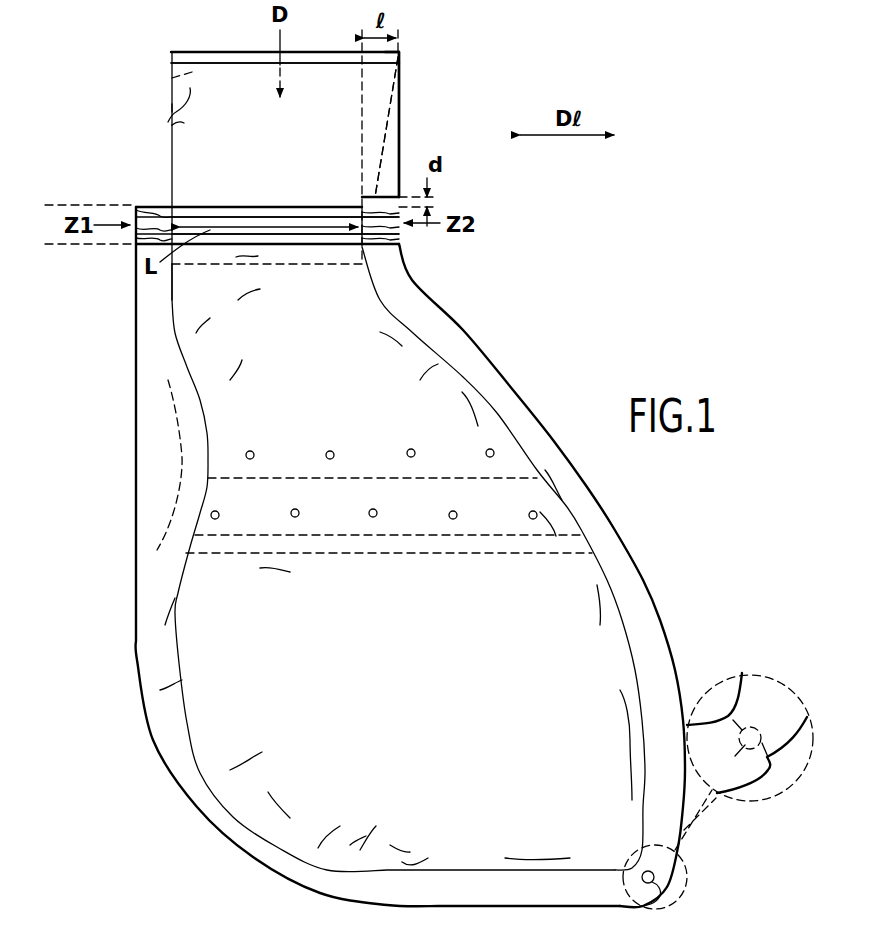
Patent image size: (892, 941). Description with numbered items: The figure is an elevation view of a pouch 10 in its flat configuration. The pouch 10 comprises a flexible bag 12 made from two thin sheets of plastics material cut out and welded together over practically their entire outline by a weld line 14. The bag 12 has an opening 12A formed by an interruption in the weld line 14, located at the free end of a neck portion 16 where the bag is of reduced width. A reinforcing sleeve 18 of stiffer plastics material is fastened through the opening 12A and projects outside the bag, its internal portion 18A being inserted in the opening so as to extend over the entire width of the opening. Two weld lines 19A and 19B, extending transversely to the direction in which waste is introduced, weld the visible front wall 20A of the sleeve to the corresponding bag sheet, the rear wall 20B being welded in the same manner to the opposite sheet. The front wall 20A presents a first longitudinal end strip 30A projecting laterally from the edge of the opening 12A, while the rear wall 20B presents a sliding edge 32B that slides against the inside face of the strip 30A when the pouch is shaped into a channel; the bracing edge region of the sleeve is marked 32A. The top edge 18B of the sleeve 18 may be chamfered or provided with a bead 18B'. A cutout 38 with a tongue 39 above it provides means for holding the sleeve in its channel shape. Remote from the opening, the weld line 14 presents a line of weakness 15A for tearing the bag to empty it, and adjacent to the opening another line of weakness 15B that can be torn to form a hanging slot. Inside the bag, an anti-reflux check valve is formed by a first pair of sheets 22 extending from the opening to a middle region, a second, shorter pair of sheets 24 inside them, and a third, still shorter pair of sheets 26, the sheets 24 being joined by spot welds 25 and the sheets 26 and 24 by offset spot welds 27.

The pouch 10 is at (496, 302).
The flexible bag 12 is at (448, 707).
The opening 12A is at (253, 206).
The weld line 14 is at (603, 513).
The line of weakness 15A is at (765, 718).
The line of weakness 15B is at (180, 455).
The neck portion 16 is at (50, 205).
The reinforcing sleeve 18 is at (148, 92).
The internal portion of the sleeve 18A is at (232, 258).
The top edge of the sleeve 18B is at (329, 37).
The bead 18B' is at (285, 40).
The weld line 19A is at (303, 214).
The weld line 19B is at (313, 242).
The front wall of the sleeve 20A is at (212, 78).
The rear wall of the sleeve 20B is at (172, 78).
The first pair of sheets 22 is at (441, 546).
The second pair of sheets 24 is at (362, 522).
The spot welds 25 is at (291, 513).
The third pair of sheets 26 is at (357, 468).
The spot welds 27 is at (330, 451).
The first longitudinal end strip 30A is at (400, 58).
The spout side edge 32A is at (400, 97).
The sliding edge 32B is at (388, 125).
The cutout 38 is at (186, 118).
The tongue 39 is at (172, 112).